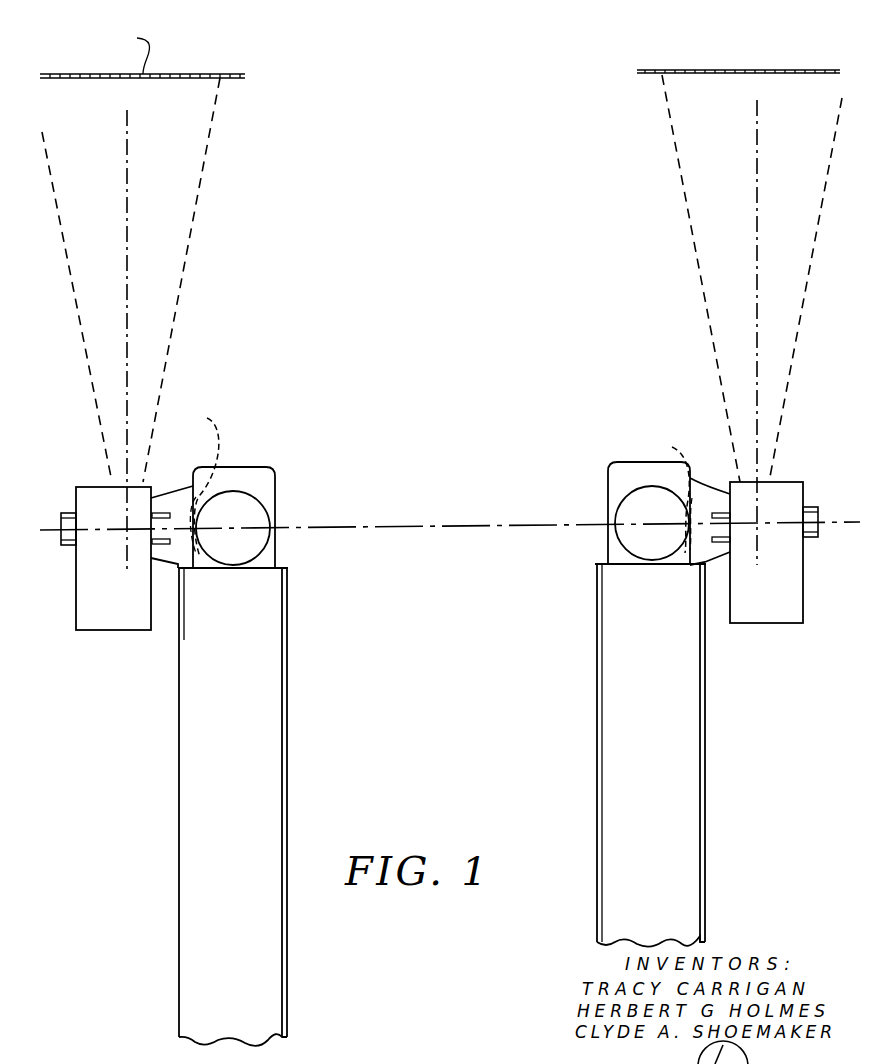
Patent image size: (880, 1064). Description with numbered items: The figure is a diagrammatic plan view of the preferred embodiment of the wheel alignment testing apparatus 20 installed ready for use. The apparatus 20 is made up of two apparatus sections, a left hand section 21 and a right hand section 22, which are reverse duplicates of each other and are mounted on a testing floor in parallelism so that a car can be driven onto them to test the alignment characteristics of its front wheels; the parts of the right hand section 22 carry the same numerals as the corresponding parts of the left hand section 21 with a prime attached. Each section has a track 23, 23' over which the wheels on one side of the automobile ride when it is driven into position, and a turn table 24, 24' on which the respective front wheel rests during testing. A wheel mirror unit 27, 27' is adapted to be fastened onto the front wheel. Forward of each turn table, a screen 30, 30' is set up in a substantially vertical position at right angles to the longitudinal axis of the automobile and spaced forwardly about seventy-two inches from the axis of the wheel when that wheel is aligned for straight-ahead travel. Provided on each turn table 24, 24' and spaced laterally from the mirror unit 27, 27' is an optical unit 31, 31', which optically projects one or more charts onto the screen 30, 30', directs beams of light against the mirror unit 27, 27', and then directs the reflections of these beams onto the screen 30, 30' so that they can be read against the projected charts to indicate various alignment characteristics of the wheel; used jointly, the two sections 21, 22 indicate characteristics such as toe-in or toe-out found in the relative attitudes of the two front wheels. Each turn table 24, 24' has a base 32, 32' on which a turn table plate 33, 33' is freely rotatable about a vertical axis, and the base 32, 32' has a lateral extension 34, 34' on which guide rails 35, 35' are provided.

The apparatus 20 is at (442, 90).
The left hand section 21 is at (298, 313).
The right hand section 22 is at (583, 308).
The track 23 is at (262, 807).
The track 23' is at (617, 755).
The turn table 24 is at (239, 450).
The turn table 24' is at (618, 447).
The wheel mirror unit 27 is at (196, 483).
The wheel mirror unit 27' is at (691, 493).
The screen 30 is at (146, 53).
The screen 30' is at (738, 47).
The optical unit 31 is at (113, 581).
The optical unit 31' is at (766, 578).
The base 32 is at (252, 502).
The base 32' is at (614, 513).
The turn table plate 33 is at (256, 518).
The turn table plate 33' is at (618, 523).
The lateral extension 34 is at (172, 508).
The lateral extension 34' is at (710, 513).
The guide rails 35 is at (60, 508).
The guide rails 35' is at (820, 499).